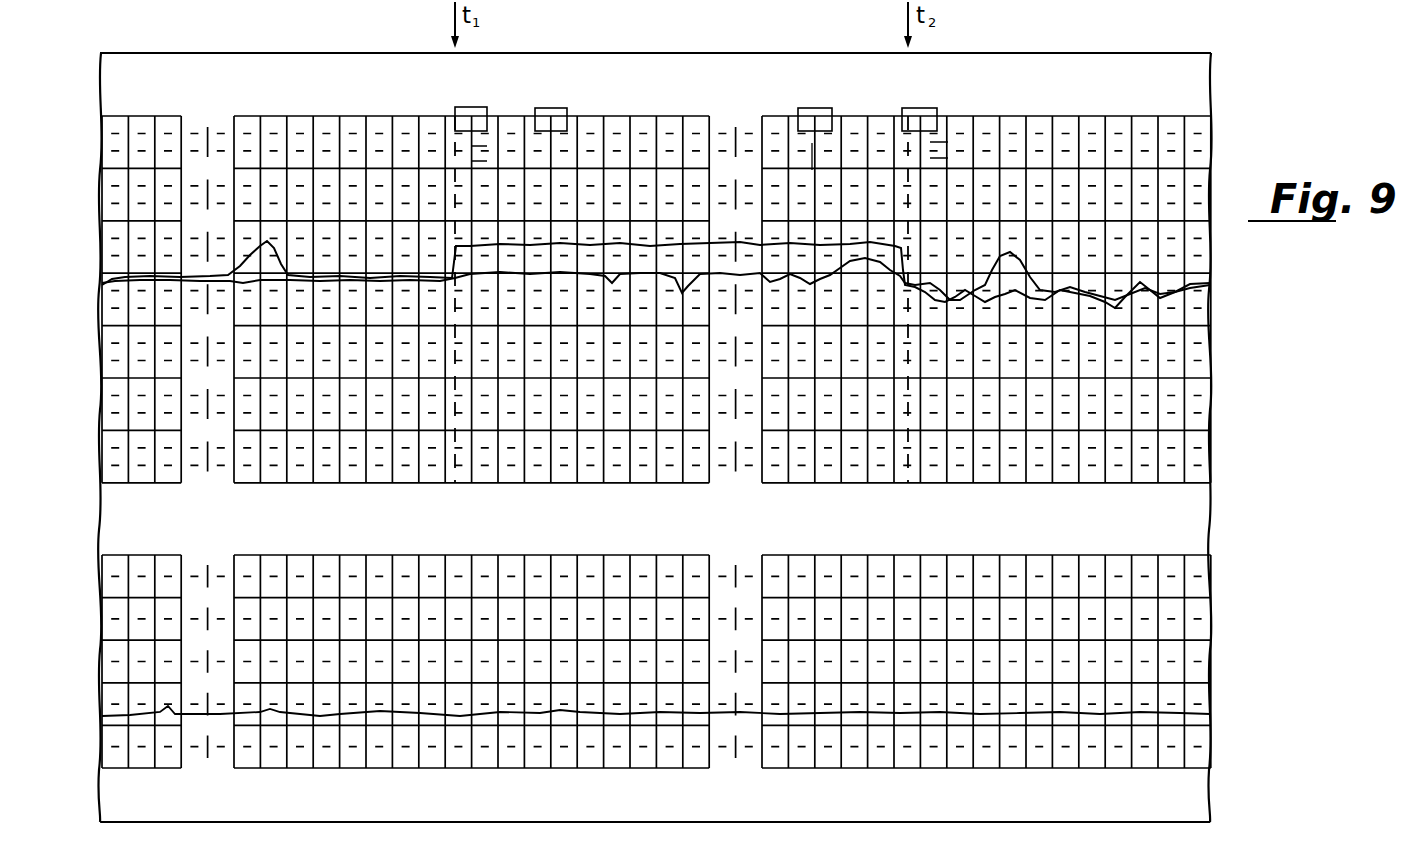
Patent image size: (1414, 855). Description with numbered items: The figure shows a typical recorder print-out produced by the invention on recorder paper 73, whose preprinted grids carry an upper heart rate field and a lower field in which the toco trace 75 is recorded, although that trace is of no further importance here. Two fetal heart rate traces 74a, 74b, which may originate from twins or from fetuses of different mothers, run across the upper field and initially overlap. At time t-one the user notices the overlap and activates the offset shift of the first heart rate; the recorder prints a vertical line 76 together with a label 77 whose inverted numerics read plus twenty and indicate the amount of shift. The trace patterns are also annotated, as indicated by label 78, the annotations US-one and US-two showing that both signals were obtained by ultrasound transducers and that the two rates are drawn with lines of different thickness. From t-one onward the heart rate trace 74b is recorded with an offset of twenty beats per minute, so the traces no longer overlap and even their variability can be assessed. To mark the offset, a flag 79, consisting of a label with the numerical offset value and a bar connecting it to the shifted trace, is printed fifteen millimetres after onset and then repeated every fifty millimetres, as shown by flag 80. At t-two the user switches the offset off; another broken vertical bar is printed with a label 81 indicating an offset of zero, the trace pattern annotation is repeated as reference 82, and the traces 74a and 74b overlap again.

The recorder paper 73 is at (1175, 523).
The first fetal heart rate trace 74a is at (270, 242).
The second fetal heart rate trace 74b is at (243, 284).
The toco trace 75 is at (322, 718).
The vertical line 76 is at (454, 468).
The label 77 is at (480, 107).
The trace pattern annotation 78 is at (517, 128).
The flag 79 is at (567, 108).
The repeated flag 80 is at (812, 131).
The label indicating offset of 0 81 is at (927, 107).
The repeated trace pattern annotation 82 is at (973, 130).